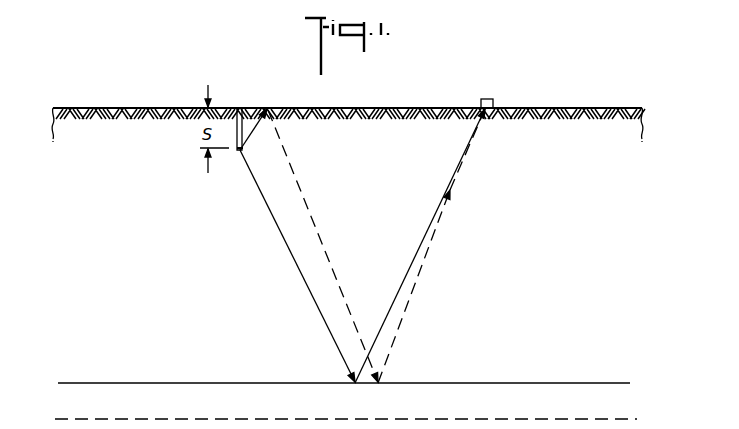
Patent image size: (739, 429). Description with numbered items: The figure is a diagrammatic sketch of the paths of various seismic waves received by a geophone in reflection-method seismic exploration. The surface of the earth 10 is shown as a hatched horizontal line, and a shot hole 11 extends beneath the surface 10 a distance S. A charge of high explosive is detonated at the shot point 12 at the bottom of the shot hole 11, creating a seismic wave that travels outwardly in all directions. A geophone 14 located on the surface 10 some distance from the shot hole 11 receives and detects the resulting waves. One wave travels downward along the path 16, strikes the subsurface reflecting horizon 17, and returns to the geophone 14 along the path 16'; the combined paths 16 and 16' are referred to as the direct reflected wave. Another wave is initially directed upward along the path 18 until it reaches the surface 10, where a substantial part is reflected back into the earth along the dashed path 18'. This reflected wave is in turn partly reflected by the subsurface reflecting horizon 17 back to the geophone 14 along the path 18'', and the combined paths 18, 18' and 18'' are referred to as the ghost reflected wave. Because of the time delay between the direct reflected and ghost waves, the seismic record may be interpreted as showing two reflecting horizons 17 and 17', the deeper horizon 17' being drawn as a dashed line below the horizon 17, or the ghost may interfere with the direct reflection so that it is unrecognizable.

The surface of the earth 10 is at (590, 108).
The shot hole 11 is at (236, 146).
The shot point 12 is at (238, 156).
The geophone 14 is at (490, 98).
The wave path 16 is at (297, 266).
The reflected wave path 16' is at (420, 246).
The subsurface reflecting horizon 17 is at (344, 368).
The second subsurface reflecting horizon 17' is at (346, 404).
The upwardly directed wave path 18 is at (255, 138).
The reflected wave path 18' is at (323, 246).
The ghost wave path 18'' is at (434, 246).